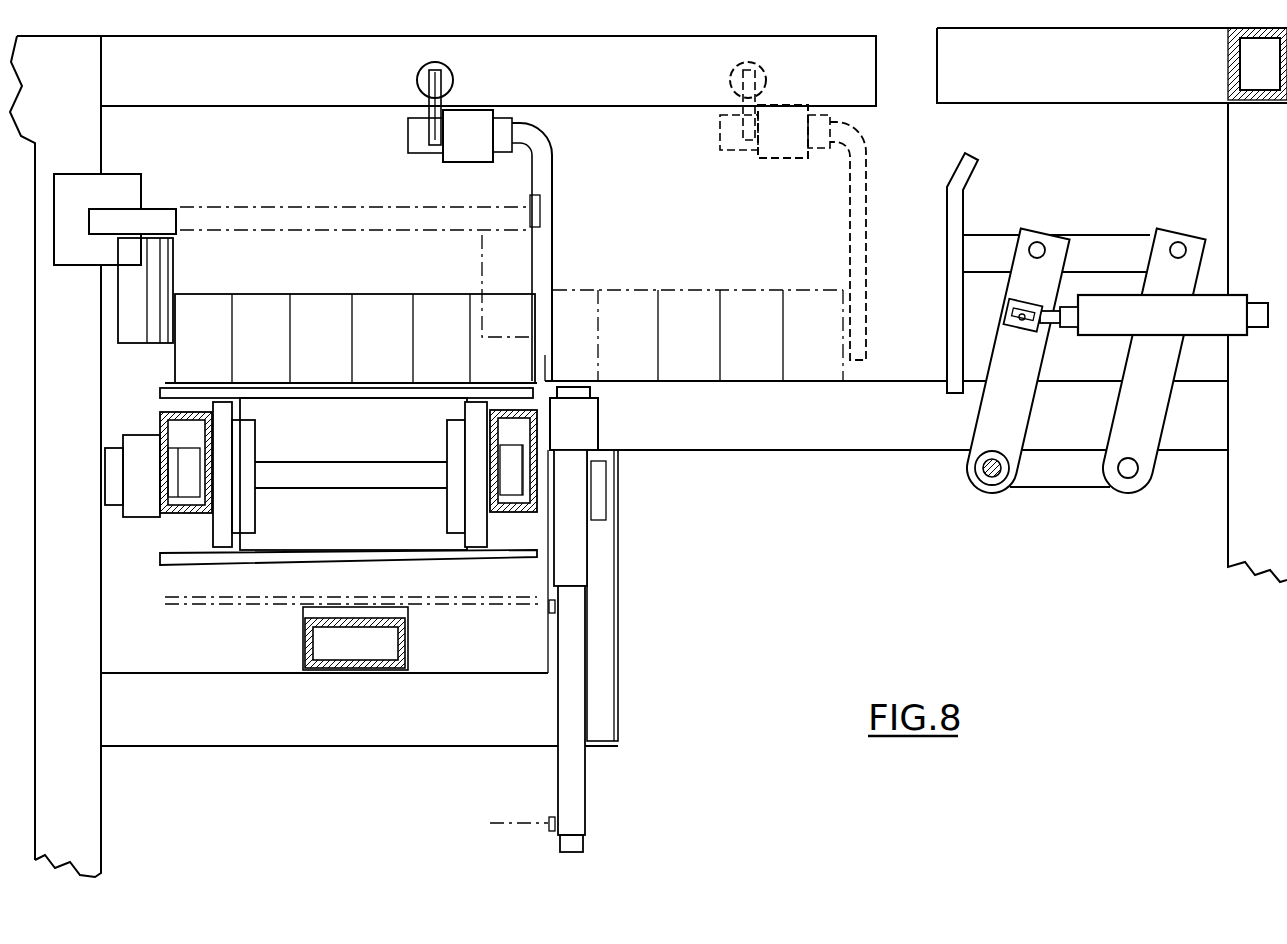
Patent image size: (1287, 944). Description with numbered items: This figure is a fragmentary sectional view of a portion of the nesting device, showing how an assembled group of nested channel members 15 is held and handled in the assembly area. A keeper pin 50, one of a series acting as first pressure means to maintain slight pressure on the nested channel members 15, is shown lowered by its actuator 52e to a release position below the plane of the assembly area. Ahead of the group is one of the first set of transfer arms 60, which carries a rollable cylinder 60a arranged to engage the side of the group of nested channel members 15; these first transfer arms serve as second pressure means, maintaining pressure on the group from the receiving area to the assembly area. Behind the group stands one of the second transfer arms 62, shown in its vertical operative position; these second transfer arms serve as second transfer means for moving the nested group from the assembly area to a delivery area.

The channel members 15 is at (845, 282).
The keeper pins 50 is at (562, 387).
The actuator 52e is at (572, 648).
The first set of transfer arms 60 is at (166, 191).
The rollable cylinder 60a is at (178, 280).
The second transfer arms 62 is at (556, 156).